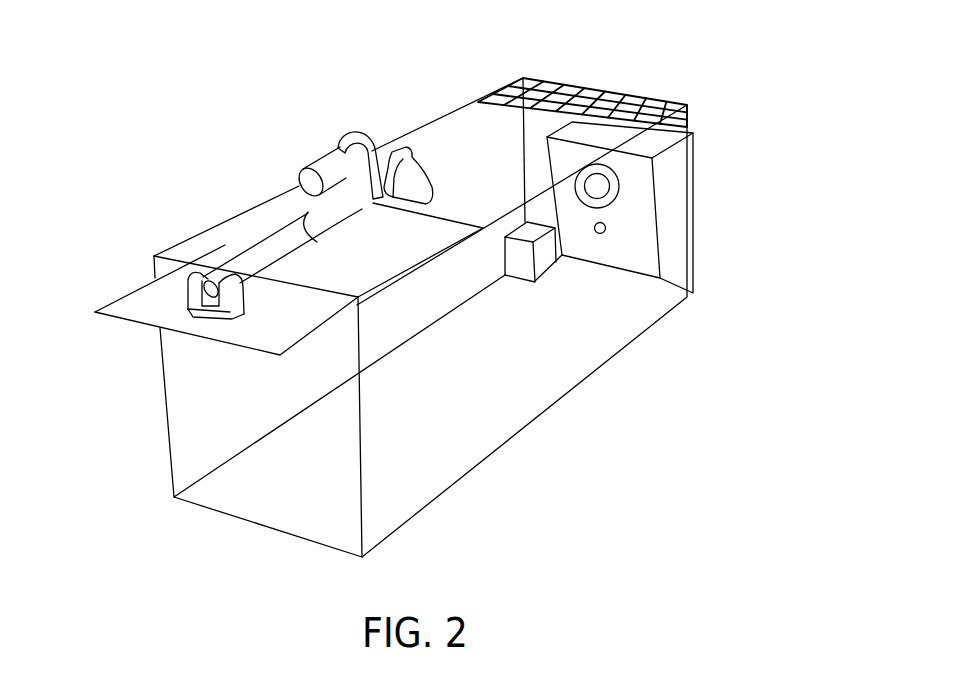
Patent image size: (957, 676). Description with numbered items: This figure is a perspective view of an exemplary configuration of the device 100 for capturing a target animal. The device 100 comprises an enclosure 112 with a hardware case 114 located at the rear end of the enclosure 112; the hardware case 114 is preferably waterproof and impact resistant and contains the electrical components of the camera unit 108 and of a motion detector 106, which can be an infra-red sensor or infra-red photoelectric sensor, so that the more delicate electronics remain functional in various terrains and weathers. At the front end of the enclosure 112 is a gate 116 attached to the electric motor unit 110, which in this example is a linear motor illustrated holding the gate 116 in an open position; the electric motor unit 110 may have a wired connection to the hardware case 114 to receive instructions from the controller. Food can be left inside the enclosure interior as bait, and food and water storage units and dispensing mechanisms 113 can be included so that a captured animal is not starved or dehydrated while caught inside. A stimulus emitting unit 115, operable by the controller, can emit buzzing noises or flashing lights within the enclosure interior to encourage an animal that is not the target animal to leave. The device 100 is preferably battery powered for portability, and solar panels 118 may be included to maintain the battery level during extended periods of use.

The device 100 is at (449, 100).
The motion detector 106 is at (599, 168).
The camera unit 108 is at (590, 182).
The electric motor unit 110 is at (337, 155).
The enclosure 112 is at (460, 464).
The food and water storage units and dispensing mechanisms 113 is at (535, 245).
The hardware case 114 is at (675, 239).
The stimulus emitting unit 115 is at (597, 226).
The gate 116 is at (110, 289).
The solar panels 118 is at (647, 90).